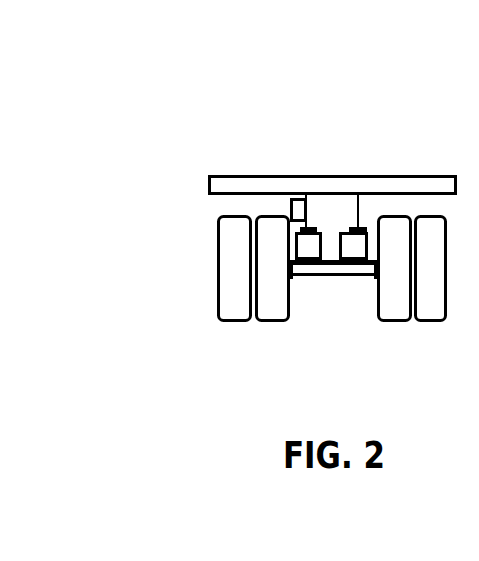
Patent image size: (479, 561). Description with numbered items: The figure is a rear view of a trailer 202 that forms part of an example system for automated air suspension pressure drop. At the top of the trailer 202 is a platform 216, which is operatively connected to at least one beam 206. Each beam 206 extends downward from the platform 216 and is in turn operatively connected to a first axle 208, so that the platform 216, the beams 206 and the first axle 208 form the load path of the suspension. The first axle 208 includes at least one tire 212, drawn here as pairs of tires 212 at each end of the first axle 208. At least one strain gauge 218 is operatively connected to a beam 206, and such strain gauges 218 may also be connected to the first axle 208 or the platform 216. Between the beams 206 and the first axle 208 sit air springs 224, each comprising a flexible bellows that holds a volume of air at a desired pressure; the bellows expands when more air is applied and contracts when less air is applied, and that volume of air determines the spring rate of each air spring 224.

The trailer 202 is at (297, 221).
The platform 216 is at (243, 177).
The beam 206 is at (320, 266).
The strain gauge 218 is at (291, 211).
The tire 212 is at (232, 310).
The air spring 224 is at (355, 247).
The first axle 208 is at (358, 268).